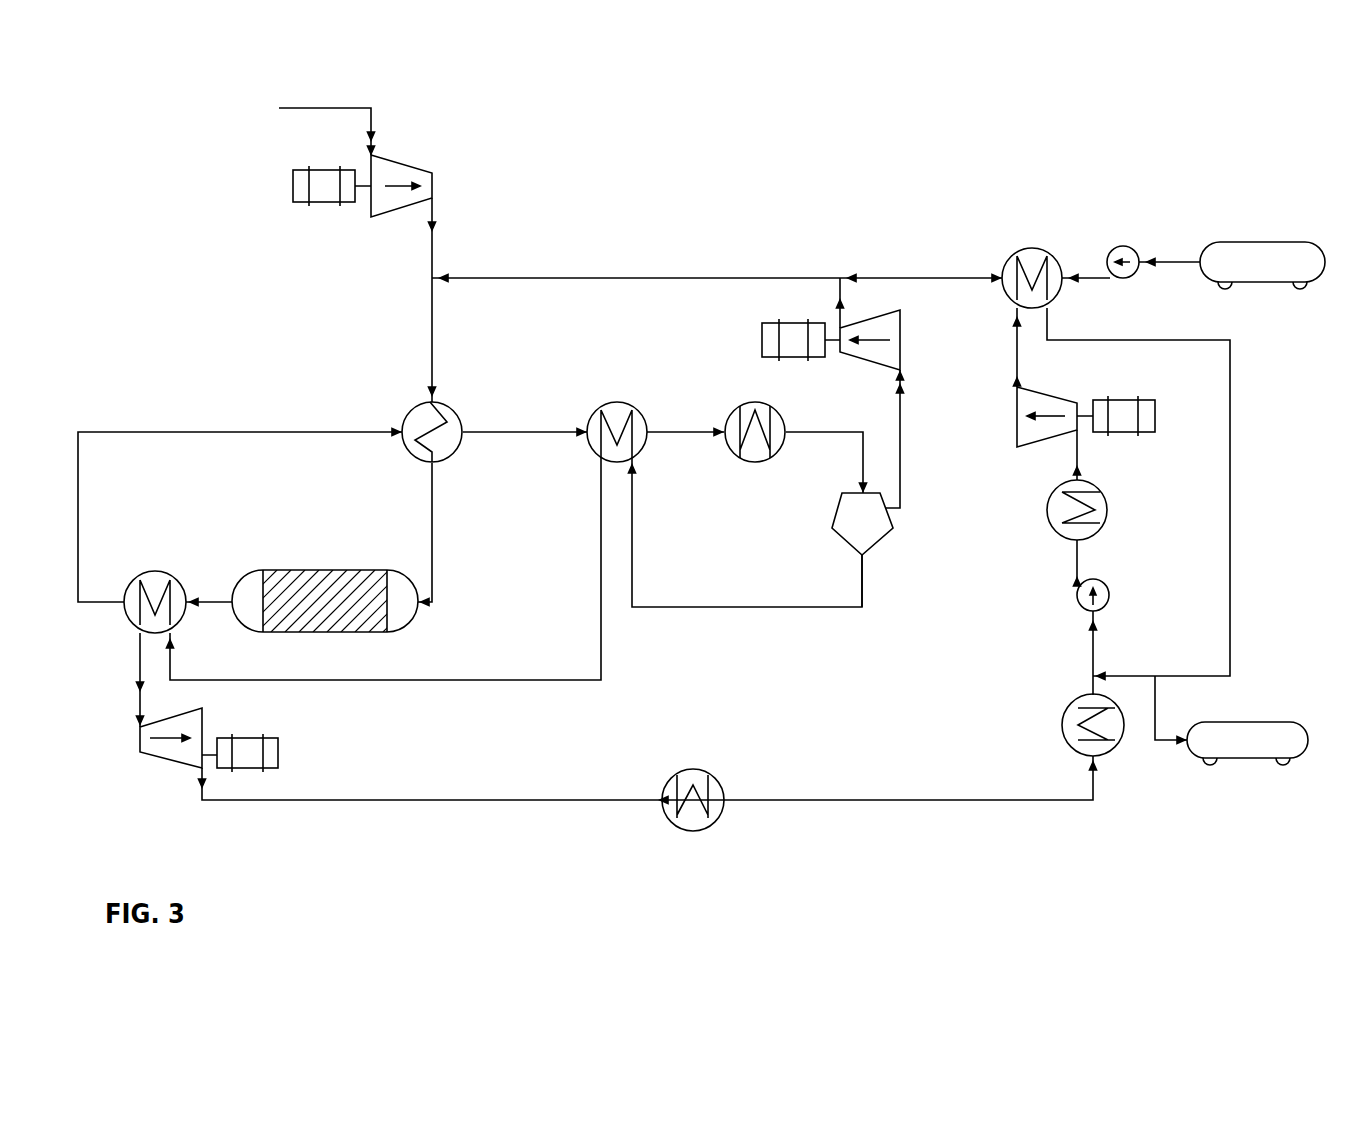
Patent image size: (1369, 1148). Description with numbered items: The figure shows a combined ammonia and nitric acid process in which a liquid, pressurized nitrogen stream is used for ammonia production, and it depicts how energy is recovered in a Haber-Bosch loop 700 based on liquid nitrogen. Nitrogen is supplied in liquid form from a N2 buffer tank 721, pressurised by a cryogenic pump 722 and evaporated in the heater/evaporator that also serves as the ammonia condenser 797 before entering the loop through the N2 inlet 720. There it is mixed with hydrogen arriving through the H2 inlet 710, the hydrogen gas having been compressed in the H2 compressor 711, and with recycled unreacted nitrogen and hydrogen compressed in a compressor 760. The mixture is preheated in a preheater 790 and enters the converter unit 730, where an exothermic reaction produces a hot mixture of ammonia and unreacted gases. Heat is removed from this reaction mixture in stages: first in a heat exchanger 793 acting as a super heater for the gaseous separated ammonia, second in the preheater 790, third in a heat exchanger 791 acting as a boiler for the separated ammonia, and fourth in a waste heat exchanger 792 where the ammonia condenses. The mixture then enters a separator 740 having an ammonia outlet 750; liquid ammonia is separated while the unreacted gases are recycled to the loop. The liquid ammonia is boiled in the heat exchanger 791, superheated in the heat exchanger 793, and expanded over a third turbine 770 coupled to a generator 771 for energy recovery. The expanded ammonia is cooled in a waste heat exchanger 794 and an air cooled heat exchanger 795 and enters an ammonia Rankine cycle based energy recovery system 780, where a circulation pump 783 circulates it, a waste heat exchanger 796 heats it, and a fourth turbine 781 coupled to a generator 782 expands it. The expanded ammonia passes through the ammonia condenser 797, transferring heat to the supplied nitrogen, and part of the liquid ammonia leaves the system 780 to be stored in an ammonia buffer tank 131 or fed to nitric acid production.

The Haber-Bosch loop 700 is at (587, 501).
The H2 inlet 710 is at (434, 277).
The H2 compressor 711 is at (404, 205).
The N2 inlet 720 is at (840, 275).
The N2 buffer tank 721 is at (1245, 242).
The cryogenic pump 722 is at (1122, 246).
The converter unit 730 is at (297, 570).
The separator 740 is at (884, 535).
The ammonia outlet 750 is at (862, 580).
The compressor 760 is at (900, 340).
The third turbine 770 is at (174, 744).
The generator 771 is at (278, 758).
The ammonia Rankine cycle based energy recovery system 780 is at (1122, 501).
The fourth turbine 781 is at (1017, 418).
The generator 782 is at (1155, 432).
The circulation pump 783 is at (1077, 601).
The preheater 790 is at (444, 408).
The heat exchanger 791 is at (613, 402).
The waste heat exchanger 792 is at (757, 463).
The heat exchanger 793 is at (160, 572).
The waste heat exchanger 794 is at (693, 832).
The air cooled heat exchanger 795 is at (1118, 745).
The waste heat exchanger 796 is at (1047, 512).
The ammonia condenser 797 is at (1018, 248).
The ammonia buffer tank 131 is at (1252, 760).